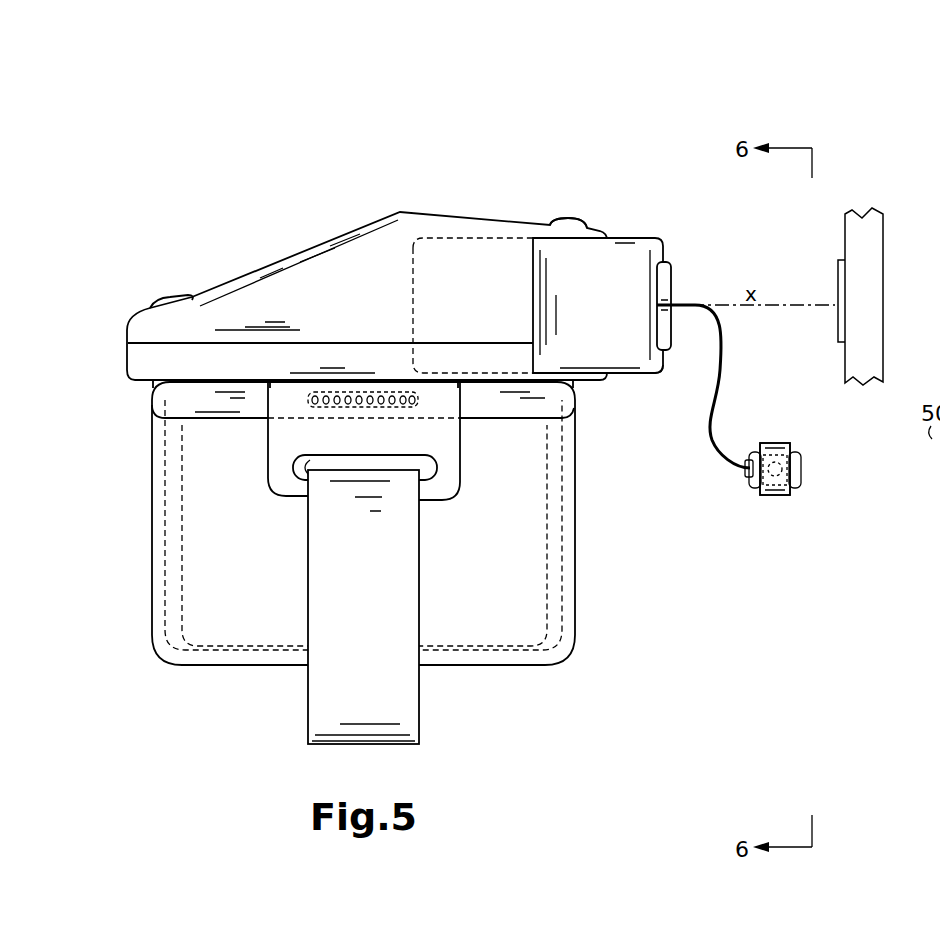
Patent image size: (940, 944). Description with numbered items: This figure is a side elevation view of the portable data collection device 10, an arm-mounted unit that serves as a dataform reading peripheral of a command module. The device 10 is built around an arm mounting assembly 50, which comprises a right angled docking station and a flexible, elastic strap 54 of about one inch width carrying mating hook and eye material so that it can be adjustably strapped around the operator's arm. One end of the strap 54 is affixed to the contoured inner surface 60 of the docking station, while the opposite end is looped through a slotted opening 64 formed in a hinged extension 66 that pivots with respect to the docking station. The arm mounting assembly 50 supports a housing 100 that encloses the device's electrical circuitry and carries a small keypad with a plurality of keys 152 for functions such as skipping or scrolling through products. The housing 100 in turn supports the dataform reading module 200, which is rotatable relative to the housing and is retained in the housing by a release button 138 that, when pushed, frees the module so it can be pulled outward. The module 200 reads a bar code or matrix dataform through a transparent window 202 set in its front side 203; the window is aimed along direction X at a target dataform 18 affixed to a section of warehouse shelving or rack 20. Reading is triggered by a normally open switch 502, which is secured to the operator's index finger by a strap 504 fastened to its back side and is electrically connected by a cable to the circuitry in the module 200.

The portable data collection device 10 is at (570, 162).
The target dataform 18 is at (838, 285).
The warehouse shelving or rack 20 is at (866, 245).
The arm mounting assembly 50 is at (590, 573).
The strap 54 is at (432, 697).
The inner surface 60 is at (485, 573).
The slotted opening 64 is at (270, 479).
The hinged extension 66 is at (428, 442).
The housing 100 is at (366, 208).
The release button 138 is at (575, 224).
The keys 152 is at (168, 300).
The dataform reading module 200 is at (648, 220).
The transparent window 202 is at (668, 280).
The front side 203 is at (664, 362).
The normally open switch 502 is at (798, 470).
The strap 504 is at (774, 445).